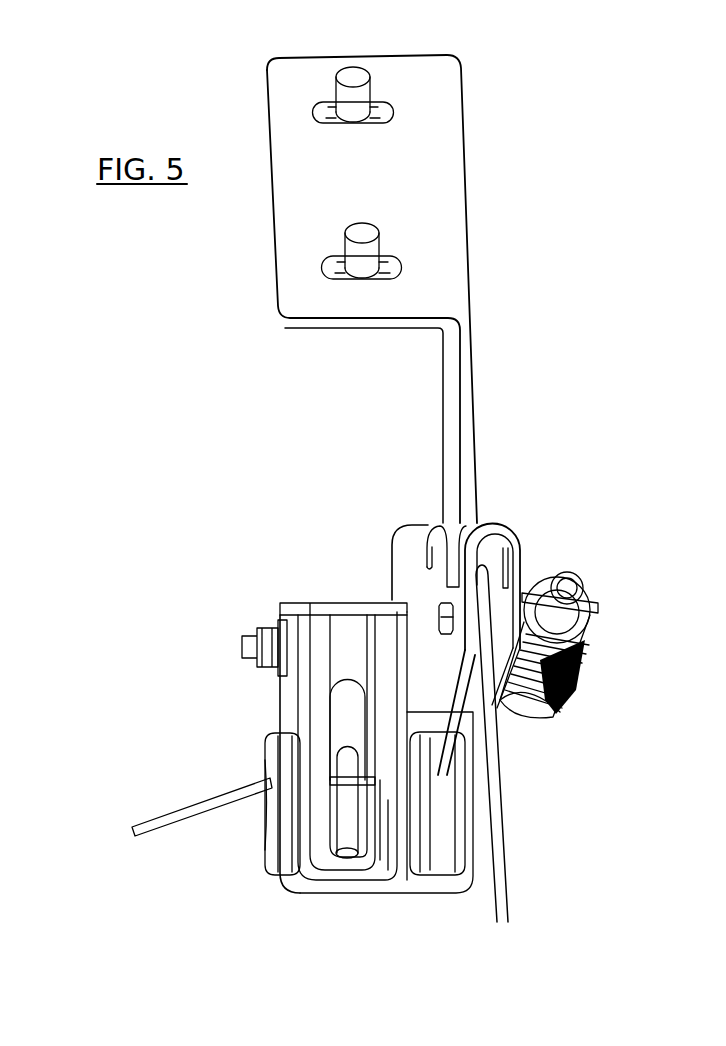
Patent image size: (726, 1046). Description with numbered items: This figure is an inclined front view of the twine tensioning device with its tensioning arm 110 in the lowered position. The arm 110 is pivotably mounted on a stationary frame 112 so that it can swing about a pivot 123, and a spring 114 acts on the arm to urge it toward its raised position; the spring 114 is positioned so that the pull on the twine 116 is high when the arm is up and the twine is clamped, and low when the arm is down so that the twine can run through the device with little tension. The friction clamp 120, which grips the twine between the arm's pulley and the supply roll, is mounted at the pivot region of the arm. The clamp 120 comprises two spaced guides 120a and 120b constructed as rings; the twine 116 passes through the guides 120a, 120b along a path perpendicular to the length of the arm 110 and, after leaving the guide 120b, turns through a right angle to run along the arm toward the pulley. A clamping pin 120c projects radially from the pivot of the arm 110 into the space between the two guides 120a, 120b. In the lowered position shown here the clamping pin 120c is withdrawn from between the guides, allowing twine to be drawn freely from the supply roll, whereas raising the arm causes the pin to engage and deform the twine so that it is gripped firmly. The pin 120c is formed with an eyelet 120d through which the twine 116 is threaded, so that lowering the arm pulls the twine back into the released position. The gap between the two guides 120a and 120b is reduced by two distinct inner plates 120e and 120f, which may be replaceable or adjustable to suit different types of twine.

The tensioning arm 110 is at (513, 530).
The stationary frame 112 is at (432, 197).
The spring 114 is at (592, 630).
The twine 116 is at (178, 815).
The friction clamp 120 is at (296, 729).
The guide 120a is at (277, 748).
The guide 120b is at (443, 883).
The clamping pin 120c is at (348, 690).
The eyelet 120d is at (352, 817).
The inner plate 120e is at (318, 623).
The inner plate 120f is at (387, 790).
The pivot 123 is at (252, 638).